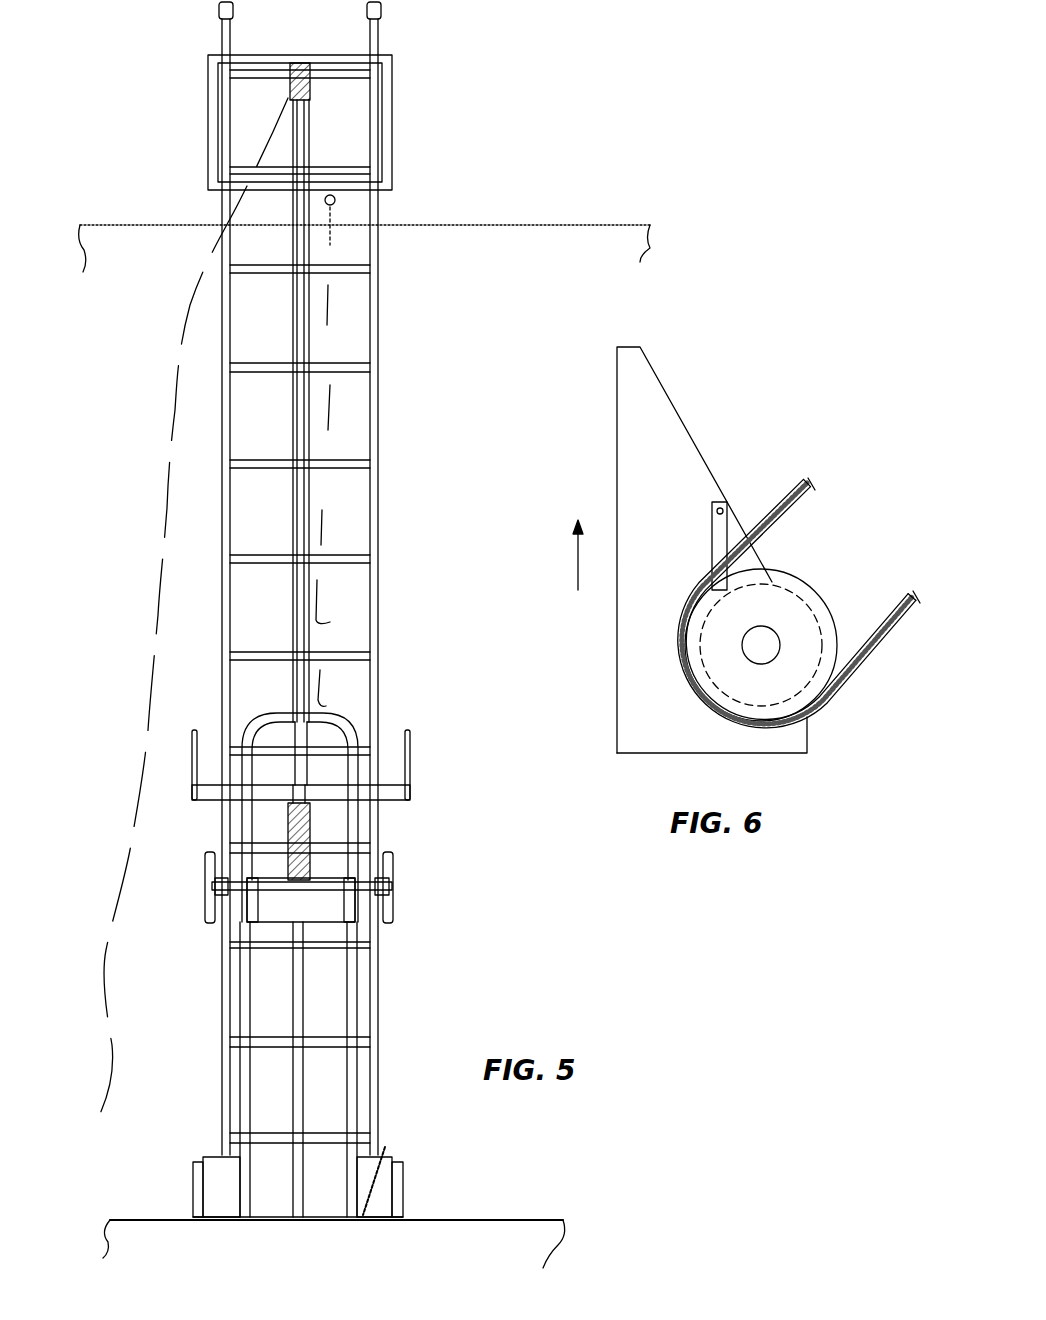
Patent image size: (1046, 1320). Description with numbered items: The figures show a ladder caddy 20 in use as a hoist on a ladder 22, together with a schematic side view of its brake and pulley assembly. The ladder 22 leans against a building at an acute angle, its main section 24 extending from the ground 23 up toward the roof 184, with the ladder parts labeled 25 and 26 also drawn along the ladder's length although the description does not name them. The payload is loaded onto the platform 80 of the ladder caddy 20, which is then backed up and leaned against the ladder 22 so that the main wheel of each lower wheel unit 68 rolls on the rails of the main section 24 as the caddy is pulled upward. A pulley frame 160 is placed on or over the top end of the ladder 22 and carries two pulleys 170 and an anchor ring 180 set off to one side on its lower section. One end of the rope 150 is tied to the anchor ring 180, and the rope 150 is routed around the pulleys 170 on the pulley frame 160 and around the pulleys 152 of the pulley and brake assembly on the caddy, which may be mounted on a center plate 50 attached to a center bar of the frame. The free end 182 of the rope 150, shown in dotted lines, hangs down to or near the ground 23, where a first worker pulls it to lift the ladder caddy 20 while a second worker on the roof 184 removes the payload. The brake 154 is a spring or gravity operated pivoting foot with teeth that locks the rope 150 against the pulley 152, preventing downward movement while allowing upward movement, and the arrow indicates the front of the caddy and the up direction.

In FIG. 5, the ladder caddy 20 is at (398, 873).
In FIG. 5, the ladder 22 is at (402, 310).
In FIG. 5, the ground 23 is at (527, 1218).
In FIG. 5, the main section 24 is at (385, 1005).
In FIG. 5, the inner rail 25 is at (360, 967).
In FIG. 5, the upper mast section 26 is at (383, 402).
In FIG. 6, the center plate 50 is at (790, 737).
In FIG. 5, the lower wheel unit 68 is at (401, 1186).
In FIG. 5, the platform 80 is at (385, 1147).
In FIG. 5, the rope 150 is at (310, 496).
In FIG. 6, the rope 150 is at (795, 512).
In FIG. 6, the pulley 152 is at (797, 583).
In FIG. 6, the brake 154 is at (720, 520).
In FIG. 5, the pulley frame 160 is at (395, 102).
In FIG. 5, the pulley 170 is at (288, 90).
In FIG. 5, the anchor ring 180 is at (335, 204).
In FIG. 5, the free end 182 is at (108, 915).
In FIG. 5, the roof 184 is at (550, 223).